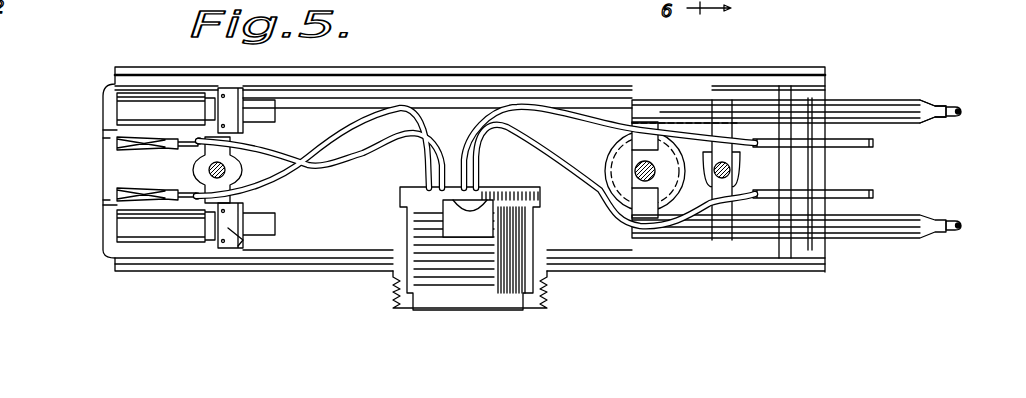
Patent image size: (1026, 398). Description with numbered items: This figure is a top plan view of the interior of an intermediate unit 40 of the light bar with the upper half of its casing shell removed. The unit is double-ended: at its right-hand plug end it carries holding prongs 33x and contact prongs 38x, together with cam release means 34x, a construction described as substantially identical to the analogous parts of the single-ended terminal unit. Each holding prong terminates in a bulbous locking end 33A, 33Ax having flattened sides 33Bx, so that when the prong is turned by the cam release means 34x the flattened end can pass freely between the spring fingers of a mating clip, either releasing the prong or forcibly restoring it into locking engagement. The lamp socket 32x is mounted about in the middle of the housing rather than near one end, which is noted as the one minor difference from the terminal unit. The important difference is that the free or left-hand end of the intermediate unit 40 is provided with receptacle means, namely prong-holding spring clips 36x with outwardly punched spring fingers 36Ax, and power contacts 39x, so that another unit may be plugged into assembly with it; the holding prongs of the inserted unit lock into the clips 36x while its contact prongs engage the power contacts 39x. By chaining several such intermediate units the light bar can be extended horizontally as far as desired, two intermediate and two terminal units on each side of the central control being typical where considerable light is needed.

The intermediate unit 40 is at (570, 56).
The power contacts 39x is at (130, 192).
The prong-holding spring clips 36x is at (245, 133).
The spring fingers 36Ax is at (250, 235).
The socket 32x is at (447, 273).
The bulbous locking end 33A is at (592, 178).
The cam release means 34x is at (623, 180).
The holding prongs 33x is at (893, 208).
The flattened sides 33Bx is at (959, 101).
The bulbous locking end 33Ax is at (961, 112).
The contact prongs 38x is at (862, 160).